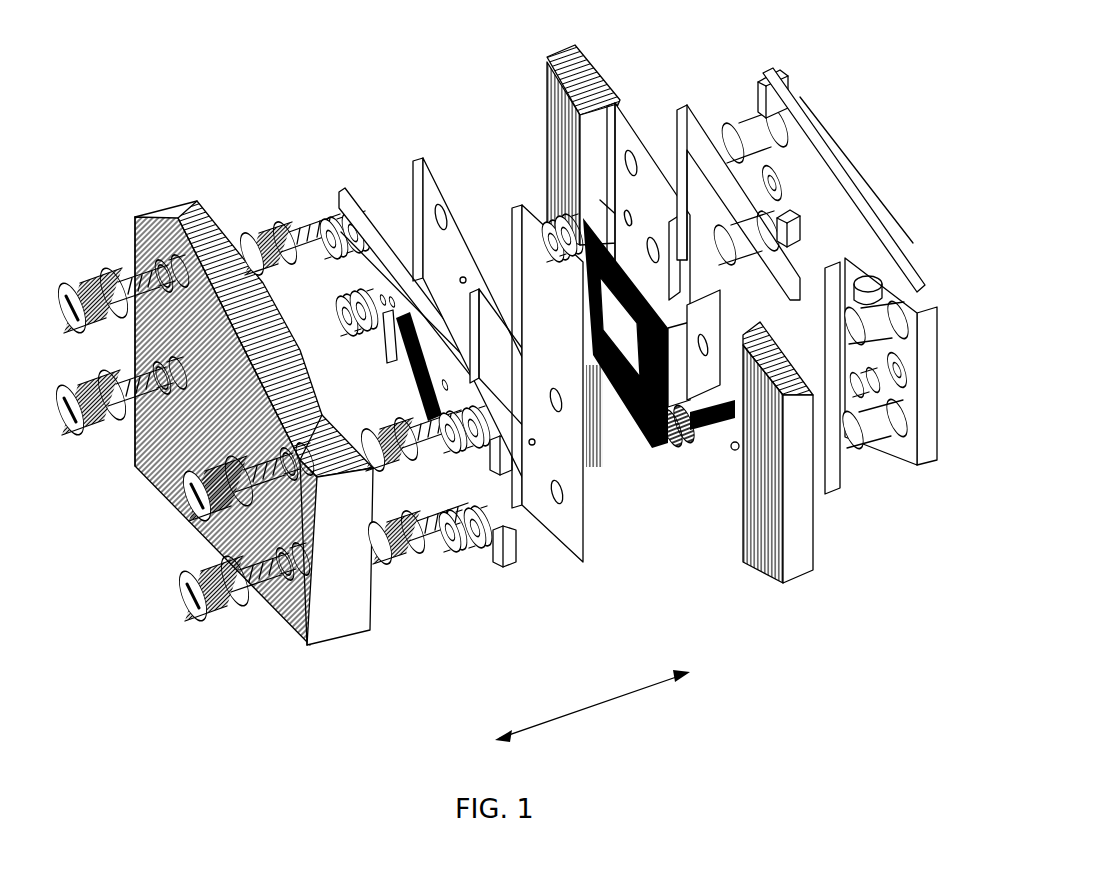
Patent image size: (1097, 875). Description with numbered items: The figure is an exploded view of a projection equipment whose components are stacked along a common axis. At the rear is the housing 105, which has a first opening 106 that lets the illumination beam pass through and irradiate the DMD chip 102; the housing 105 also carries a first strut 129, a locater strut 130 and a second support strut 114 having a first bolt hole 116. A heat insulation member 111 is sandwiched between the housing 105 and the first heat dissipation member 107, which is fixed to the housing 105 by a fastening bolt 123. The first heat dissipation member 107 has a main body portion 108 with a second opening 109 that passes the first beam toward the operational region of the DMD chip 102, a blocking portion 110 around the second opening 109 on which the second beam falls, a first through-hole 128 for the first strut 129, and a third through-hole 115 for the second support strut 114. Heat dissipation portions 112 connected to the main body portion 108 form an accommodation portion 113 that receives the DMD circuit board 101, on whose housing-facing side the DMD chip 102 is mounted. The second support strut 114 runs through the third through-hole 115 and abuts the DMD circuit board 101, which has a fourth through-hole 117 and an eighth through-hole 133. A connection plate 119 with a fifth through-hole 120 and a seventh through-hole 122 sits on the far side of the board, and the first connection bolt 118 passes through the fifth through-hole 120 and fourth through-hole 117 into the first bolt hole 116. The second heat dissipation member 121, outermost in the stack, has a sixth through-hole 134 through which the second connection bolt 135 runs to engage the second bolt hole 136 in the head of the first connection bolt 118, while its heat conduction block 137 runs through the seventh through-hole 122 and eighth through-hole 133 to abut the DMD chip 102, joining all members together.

The DMD circuit board 101 is at (578, 566).
The DMD chip 102 is at (648, 405).
The housing 105 is at (838, 265).
The first opening 106 is at (855, 262).
The first heat dissipation member 107 is at (826, 520).
The main body portion 108 is at (575, 130).
The second opening 109 is at (688, 307).
The blocking portion 110 is at (690, 262).
The heat insulation member 111 is at (684, 108).
The heat dissipation portion 112 is at (767, 510).
The accommodation portion 113 is at (733, 450).
The second support strut 114 is at (775, 133).
The third through-hole 115 is at (631, 158).
The first bolt hole 116 is at (743, 122).
The fourth through-hole 117 is at (437, 223).
The first connection bolt 118 is at (273, 253).
The connection plate 119 is at (493, 563).
The fifth through-hole 120 is at (363, 197).
The second heat dissipation member 121 is at (347, 623).
The seventh through-hole 122 is at (322, 238).
The fastening bolt 123 is at (700, 450).
The first through-hole 128 is at (652, 247).
The first strut 129 is at (788, 222).
The locater strut 130 is at (788, 247).
The eighth through-hole 133 is at (483, 330).
The sixth through-hole 134 is at (153, 270).
The second connection bolt 135 is at (67, 428).
The second bolt hole 136 is at (367, 443).
The heat conduction block 137 is at (352, 402).